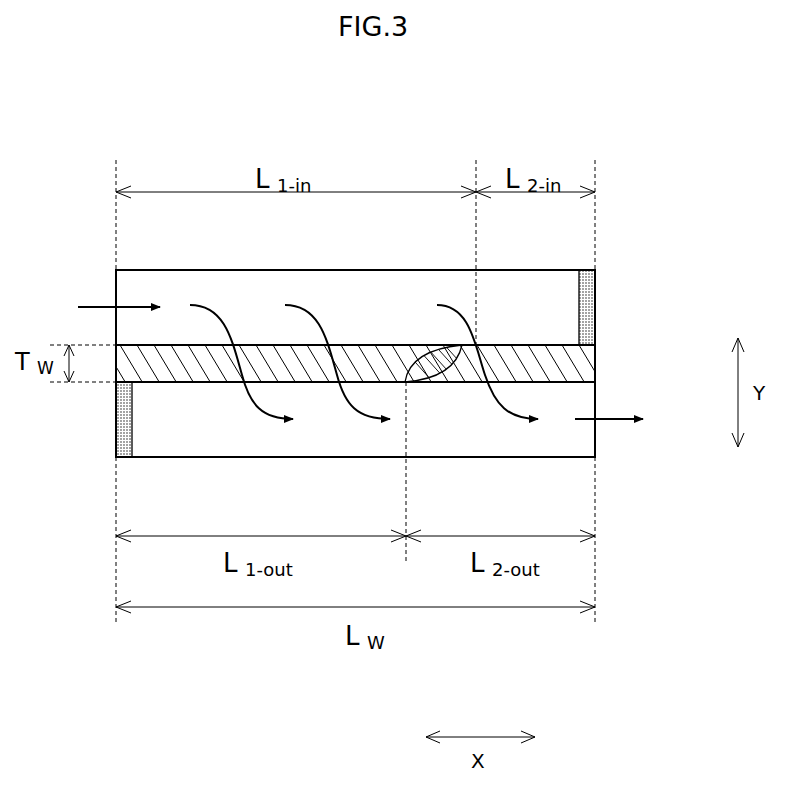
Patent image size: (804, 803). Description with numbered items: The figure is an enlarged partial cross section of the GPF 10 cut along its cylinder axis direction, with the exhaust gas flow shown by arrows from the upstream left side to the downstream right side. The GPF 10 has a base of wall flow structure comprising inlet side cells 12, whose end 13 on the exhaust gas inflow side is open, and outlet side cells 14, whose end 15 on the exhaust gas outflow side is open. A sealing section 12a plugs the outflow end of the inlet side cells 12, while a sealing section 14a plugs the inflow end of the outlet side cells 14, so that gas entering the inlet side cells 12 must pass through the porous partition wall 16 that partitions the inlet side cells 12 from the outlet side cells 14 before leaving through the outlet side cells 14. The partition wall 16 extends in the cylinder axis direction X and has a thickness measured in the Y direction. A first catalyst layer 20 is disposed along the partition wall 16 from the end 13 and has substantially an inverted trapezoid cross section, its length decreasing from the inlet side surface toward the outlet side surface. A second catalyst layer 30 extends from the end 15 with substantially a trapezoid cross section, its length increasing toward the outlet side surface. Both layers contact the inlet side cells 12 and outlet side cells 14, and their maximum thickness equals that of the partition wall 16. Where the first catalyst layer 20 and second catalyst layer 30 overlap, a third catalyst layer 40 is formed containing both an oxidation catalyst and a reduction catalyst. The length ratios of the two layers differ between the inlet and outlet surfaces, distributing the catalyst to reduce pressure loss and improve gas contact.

The GPF 10 is at (640, 217).
The inlet side cells 12 is at (240, 290).
The sealing section 12a is at (597, 292).
The end on the exhaust gas inflow side 13 is at (116, 298).
The outlet side cells 14 is at (520, 445).
The sealing section 14a is at (116, 432).
The end on the exhaust gas outflow side 15 is at (598, 445).
The partition wall 16 is at (608, 368).
The first catalyst layer 20 is at (372, 362).
The second catalyst layer 30 is at (510, 360).
The third catalyst layer 40 is at (425, 355).